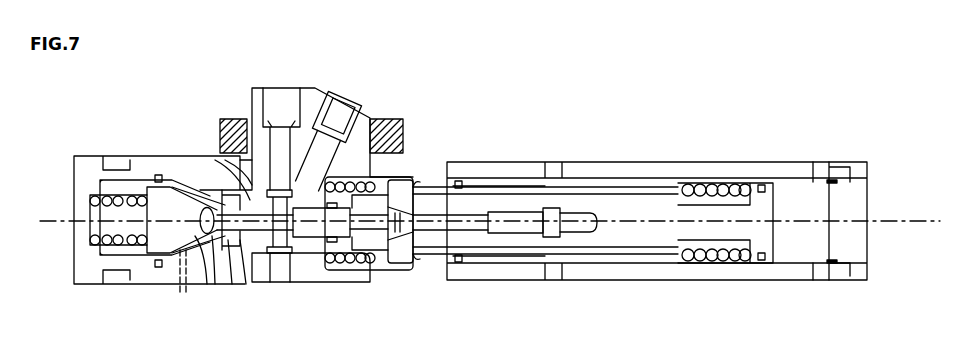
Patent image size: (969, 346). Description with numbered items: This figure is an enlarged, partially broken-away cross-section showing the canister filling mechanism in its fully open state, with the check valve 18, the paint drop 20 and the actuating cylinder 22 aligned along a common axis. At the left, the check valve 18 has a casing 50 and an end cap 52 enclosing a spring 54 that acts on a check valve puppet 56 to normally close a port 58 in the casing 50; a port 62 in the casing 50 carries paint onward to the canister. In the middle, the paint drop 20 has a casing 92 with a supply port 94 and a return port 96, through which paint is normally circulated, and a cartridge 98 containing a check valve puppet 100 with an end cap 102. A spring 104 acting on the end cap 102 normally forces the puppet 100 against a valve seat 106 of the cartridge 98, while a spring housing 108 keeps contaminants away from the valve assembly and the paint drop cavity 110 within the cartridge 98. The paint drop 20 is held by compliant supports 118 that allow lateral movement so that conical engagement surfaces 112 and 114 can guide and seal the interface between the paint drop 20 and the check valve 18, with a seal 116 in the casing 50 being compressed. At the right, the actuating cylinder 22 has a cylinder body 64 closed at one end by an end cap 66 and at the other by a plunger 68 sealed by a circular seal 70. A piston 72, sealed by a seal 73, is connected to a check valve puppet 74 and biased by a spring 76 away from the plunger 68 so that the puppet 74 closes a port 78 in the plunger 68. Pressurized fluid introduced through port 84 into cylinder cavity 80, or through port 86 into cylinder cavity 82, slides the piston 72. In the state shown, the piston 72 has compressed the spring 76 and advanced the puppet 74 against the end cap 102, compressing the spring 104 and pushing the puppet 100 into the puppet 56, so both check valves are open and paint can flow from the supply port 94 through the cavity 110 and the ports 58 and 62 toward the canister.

The check valve 18 is at (98, 152).
The paint drop 20 is at (316, 86).
The actuating cylinder 22 is at (694, 120).
The casing 50 is at (130, 156).
The end cap 52 is at (78, 164).
The spring 54 is at (96, 196).
The check valve puppet 56 is at (155, 196).
The port 58 is at (222, 246).
The port 62 is at (178, 292).
The cylinder body 64 is at (648, 172).
The end cap 66 is at (862, 172).
The plunger 68 is at (548, 196).
The circular seal 70 is at (466, 180).
The piston 72 is at (770, 242).
The seal 73 is at (762, 186).
The check valve puppet 74 is at (414, 212).
The spring 76 is at (700, 190).
The port 78 is at (425, 240).
The cylinder cavity 80 is at (797, 250).
The cylinder cavity 82 is at (722, 190).
The port 84 is at (822, 278).
The port 86 is at (555, 265).
The casing 92 is at (366, 118).
The supply port 94 is at (282, 95).
The return port 96 is at (340, 112).
The cartridge 98 is at (215, 160).
The check valve puppet 100 is at (210, 182).
The end cap 102 is at (390, 266).
The spring 104 is at (360, 268).
The valve seat 106 is at (241, 276).
The spring housing 108 is at (413, 182).
The paint drop cavity 110 is at (290, 262).
The conical engagement surface 112 is at (222, 192).
The conical engagement surface 114 is at (233, 262).
The seal 116 is at (222, 256).
The supports 118 is at (388, 134).